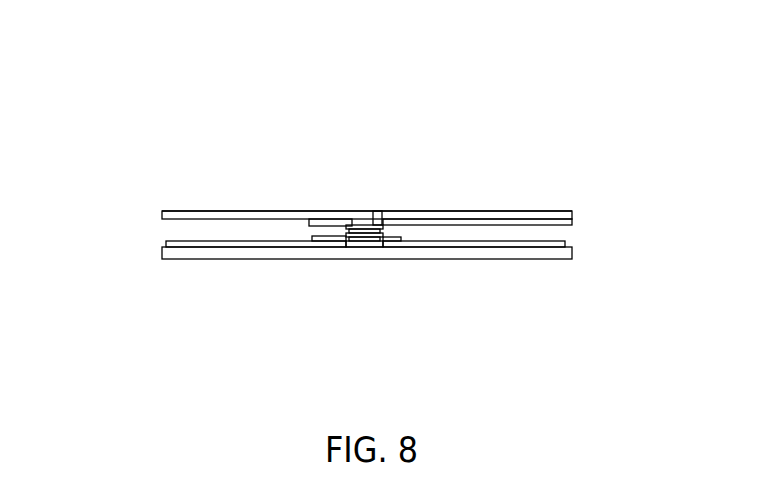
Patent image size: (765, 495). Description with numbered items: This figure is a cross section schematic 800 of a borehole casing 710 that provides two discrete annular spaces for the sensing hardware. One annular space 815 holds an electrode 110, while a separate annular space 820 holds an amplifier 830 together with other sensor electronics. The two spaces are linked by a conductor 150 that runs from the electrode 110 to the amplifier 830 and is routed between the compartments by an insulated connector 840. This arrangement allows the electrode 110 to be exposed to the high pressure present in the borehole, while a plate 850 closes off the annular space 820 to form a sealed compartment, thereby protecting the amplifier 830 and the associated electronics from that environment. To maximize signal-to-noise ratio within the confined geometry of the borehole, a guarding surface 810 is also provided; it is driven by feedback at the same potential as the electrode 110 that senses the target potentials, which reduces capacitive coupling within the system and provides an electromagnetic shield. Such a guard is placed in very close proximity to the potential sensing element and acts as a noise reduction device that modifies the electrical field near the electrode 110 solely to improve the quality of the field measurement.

The cross section schematic 800 is at (130, 108).
The electrode 110 is at (517, 218).
The plate 850 is at (222, 211).
The annular space 815 is at (477, 232).
The conductor 150 is at (331, 225).
The insulated connector 840 is at (377, 223).
The annular space 820 is at (292, 230).
The amplifier 830 is at (182, 241).
The guarding surface 810 is at (433, 242).
The borehole casing 710 is at (204, 250).